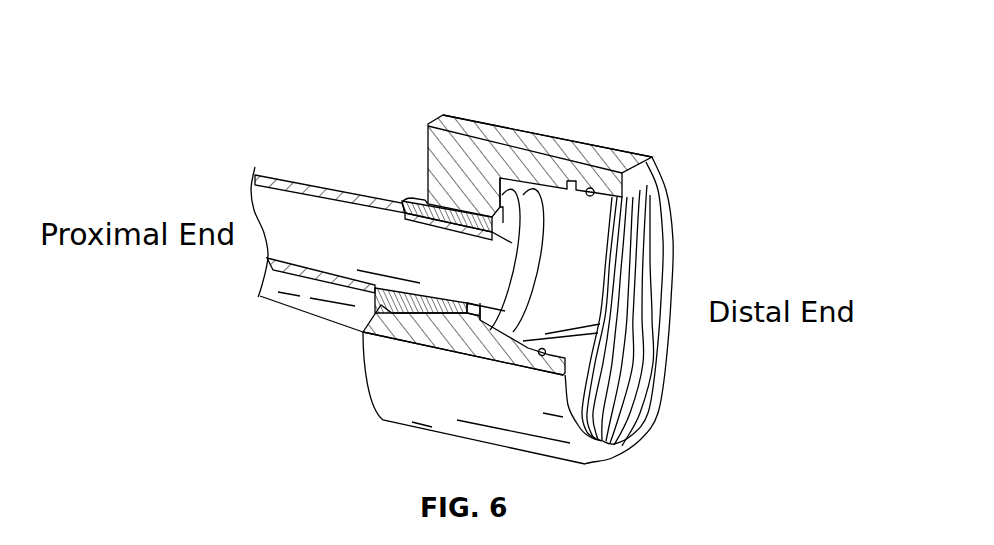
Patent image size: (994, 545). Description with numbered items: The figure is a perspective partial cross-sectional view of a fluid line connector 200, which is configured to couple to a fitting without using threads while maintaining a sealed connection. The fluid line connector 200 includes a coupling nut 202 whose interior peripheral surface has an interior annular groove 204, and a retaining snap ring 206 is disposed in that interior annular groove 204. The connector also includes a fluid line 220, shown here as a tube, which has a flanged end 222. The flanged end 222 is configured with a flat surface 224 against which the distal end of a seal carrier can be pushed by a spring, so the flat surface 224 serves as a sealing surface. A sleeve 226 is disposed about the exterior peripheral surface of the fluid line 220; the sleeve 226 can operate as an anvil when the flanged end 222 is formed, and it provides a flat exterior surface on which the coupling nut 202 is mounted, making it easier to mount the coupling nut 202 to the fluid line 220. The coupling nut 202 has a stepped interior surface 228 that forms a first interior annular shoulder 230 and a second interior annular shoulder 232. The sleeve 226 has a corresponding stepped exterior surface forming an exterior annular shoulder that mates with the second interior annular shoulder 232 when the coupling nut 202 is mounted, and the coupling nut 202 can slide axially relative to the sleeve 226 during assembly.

The fluid line connector 200 is at (292, 67).
The coupling nut 202 is at (632, 154).
The interior annular groove 204 is at (570, 180).
The retaining snap ring 206 is at (623, 193).
The fluid line 220 is at (363, 196).
The flanged end 222 is at (500, 178).
The flat surface 224 is at (518, 240).
The sleeve 226 is at (410, 198).
The stepped interior surface 228 is at (468, 190).
The first interior annular shoulder 230 is at (518, 190).
The second interior annular shoulder 232 is at (420, 215).